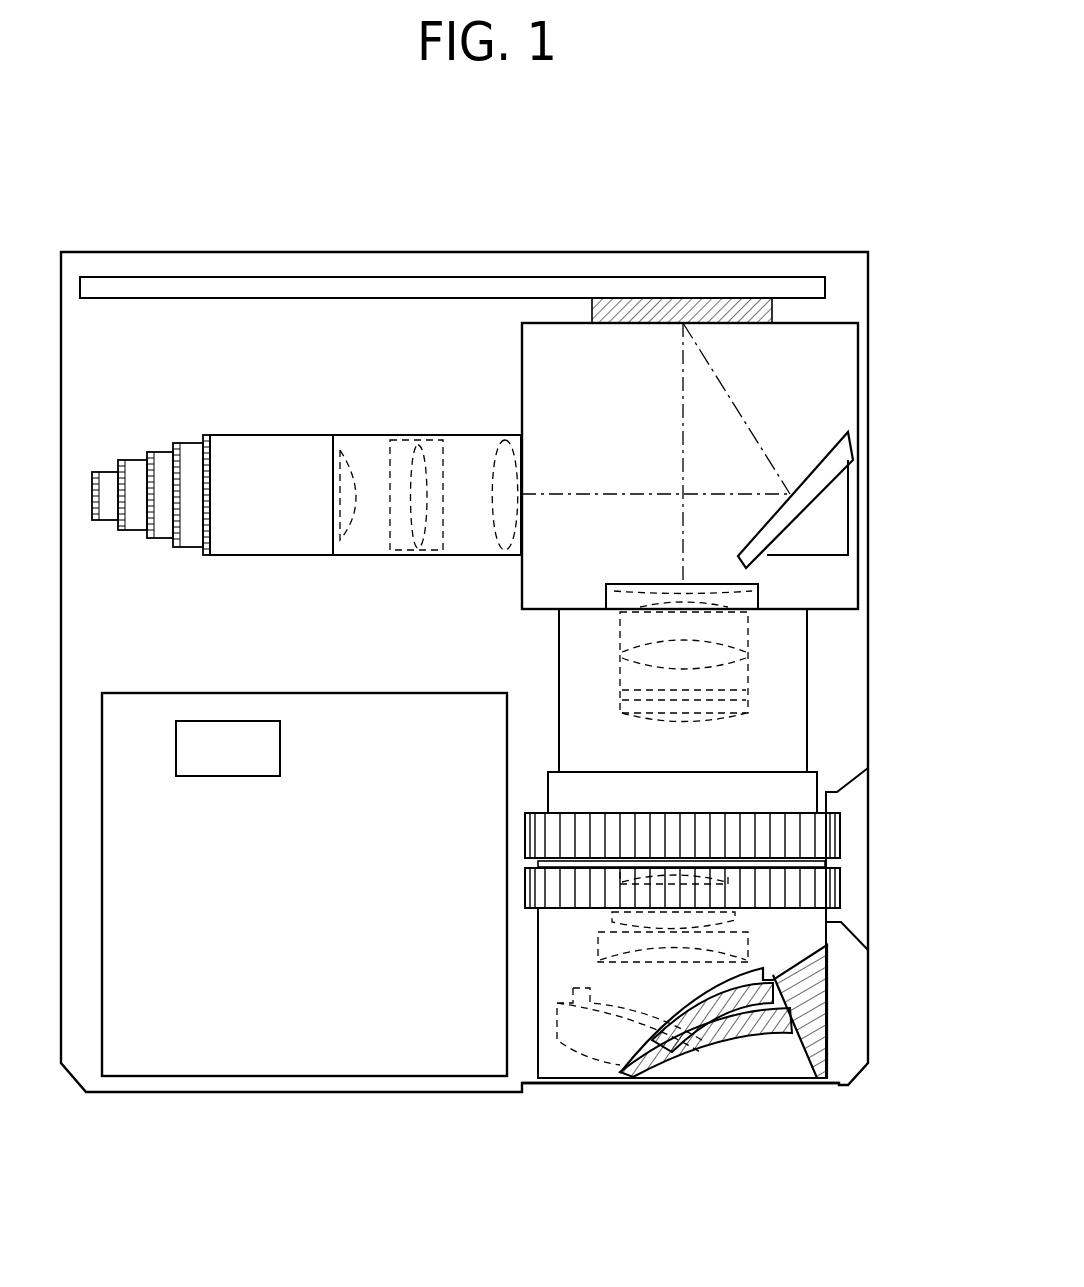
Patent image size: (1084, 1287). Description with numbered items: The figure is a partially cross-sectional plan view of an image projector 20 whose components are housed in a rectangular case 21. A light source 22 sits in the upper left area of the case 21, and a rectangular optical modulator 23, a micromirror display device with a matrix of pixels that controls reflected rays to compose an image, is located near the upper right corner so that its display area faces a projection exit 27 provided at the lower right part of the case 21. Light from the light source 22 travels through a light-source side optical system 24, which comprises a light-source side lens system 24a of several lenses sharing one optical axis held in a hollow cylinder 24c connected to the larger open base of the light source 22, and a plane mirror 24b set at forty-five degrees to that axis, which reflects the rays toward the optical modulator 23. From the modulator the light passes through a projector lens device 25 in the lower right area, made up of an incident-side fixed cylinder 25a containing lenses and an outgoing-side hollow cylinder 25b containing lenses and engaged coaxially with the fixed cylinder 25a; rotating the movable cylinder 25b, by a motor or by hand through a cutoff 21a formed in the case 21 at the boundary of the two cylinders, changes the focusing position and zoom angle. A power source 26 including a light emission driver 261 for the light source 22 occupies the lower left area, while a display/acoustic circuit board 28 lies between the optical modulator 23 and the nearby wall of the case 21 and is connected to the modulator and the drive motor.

The image projector 20 is at (803, 228).
The case 21 is at (869, 266).
The cutoff 21a is at (849, 804).
The light source 22 is at (251, 452).
The optical modulator 23 is at (672, 298).
The light-source side optical system 24 is at (489, 435).
The light-source side lens system 24a is at (422, 530).
The plane mirror 24b is at (820, 463).
The hollow cylinder 24c is at (362, 435).
The projector lens device 25 is at (832, 716).
The incident-side fixed cylinder 25a is at (789, 663).
The outgoing-side hollow cylinder 25b is at (806, 916).
The power source 26 is at (371, 700).
The light emission driver 261 is at (203, 720).
The projection exit 27 is at (540, 1062).
The display/acoustic circuit board 28 is at (538, 289).